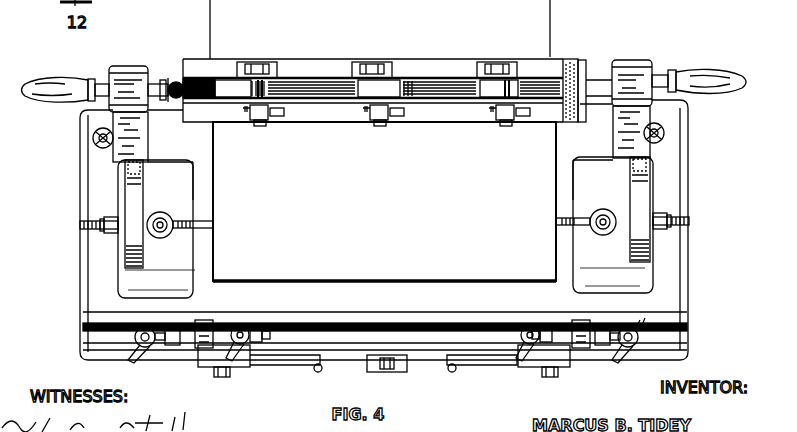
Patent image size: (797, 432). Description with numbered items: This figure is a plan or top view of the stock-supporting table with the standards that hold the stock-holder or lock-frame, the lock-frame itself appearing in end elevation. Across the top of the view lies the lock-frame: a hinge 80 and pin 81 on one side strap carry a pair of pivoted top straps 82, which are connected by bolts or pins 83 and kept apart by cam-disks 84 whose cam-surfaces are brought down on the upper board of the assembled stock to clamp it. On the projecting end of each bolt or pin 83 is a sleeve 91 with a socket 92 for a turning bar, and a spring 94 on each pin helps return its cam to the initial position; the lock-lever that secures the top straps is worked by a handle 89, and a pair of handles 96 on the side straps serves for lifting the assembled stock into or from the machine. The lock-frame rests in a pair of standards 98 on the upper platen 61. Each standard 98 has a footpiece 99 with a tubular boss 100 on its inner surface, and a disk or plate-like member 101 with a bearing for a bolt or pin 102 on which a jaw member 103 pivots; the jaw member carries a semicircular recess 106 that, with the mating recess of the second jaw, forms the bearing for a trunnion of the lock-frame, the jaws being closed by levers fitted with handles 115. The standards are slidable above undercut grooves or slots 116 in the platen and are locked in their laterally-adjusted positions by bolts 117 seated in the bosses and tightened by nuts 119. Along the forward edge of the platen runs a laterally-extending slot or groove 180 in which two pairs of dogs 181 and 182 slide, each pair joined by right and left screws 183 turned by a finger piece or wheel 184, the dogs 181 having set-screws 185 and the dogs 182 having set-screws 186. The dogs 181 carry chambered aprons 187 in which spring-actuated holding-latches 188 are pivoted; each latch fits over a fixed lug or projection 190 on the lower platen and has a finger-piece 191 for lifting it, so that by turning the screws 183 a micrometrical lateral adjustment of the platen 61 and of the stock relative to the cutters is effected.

The upper platen 61 is at (88, 305).
The hinge 80 is at (582, 62).
The pin 81 is at (568, 60).
The top straps 82 is at (412, 78).
The bolts or pins 83 is at (262, 125).
The cam-disks 84 is at (265, 88).
The handle 89 is at (176, 82).
The sleeve 91 is at (250, 120).
The socket 92 is at (280, 118).
The spring 94 is at (258, 62).
The handles 96 is at (46, 86).
The standards 98 is at (632, 256).
The footpiece 99 is at (380, 180).
The tubular boss 100 is at (175, 226).
The disk or plate-like member 101 is at (122, 198).
The bolt or pin 102 is at (112, 232).
The jaw member 103 is at (381, 134).
The semicircular recess 106 is at (122, 68).
The handles 115 is at (93, 138).
The undercut grooves or slots 116 is at (80, 226).
The bolts 117 is at (178, 236).
The nuts 119 is at (161, 215).
The laterally-extending slot or groove 180 is at (82, 337).
The dogs 181 is at (255, 320).
The dogs 182 is at (640, 322).
The right and left screws 183 is at (166, 350).
The finger piece or wheel 184 is at (197, 322).
The set-screws 185 is at (262, 326).
The set-screws 186 is at (128, 344).
The aprons 187 is at (232, 368).
The holding-latches 188 is at (285, 366).
The lug or projection 190 is at (390, 372).
The finger-piece 191 is at (321, 369).